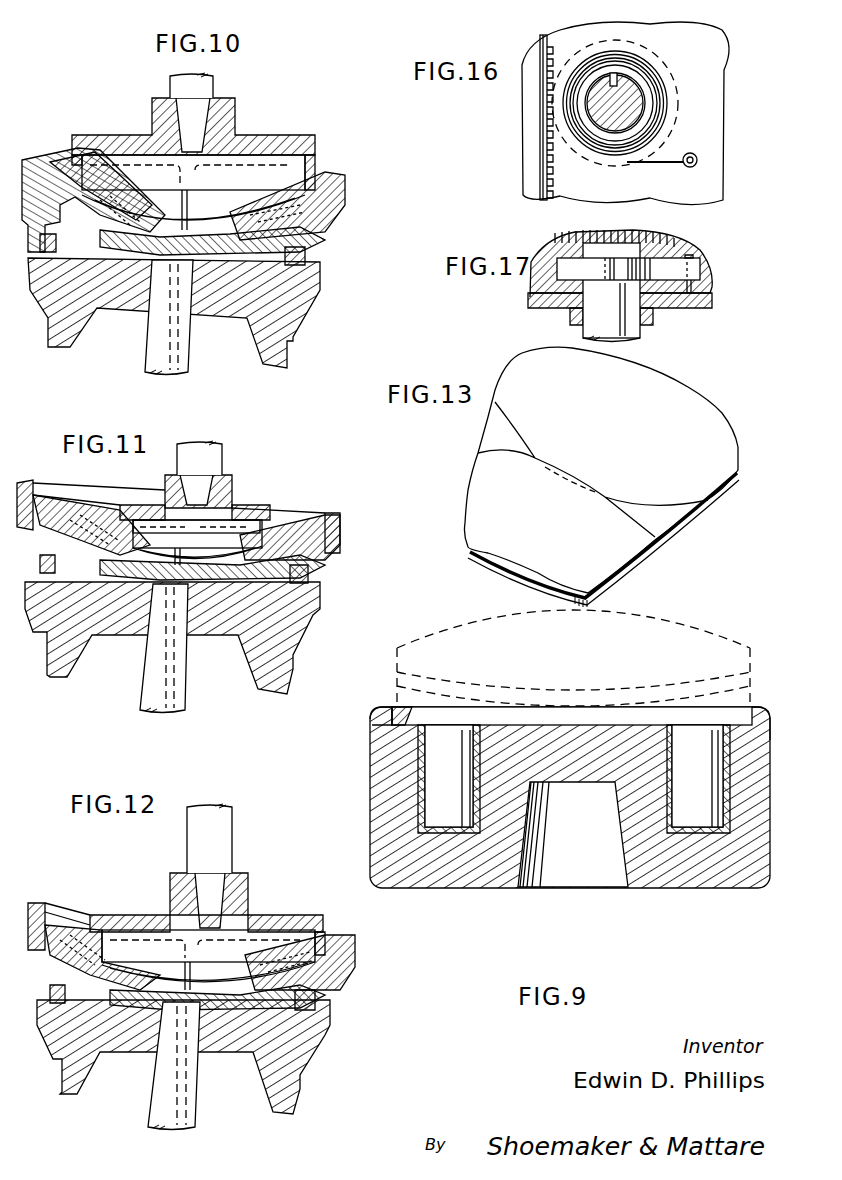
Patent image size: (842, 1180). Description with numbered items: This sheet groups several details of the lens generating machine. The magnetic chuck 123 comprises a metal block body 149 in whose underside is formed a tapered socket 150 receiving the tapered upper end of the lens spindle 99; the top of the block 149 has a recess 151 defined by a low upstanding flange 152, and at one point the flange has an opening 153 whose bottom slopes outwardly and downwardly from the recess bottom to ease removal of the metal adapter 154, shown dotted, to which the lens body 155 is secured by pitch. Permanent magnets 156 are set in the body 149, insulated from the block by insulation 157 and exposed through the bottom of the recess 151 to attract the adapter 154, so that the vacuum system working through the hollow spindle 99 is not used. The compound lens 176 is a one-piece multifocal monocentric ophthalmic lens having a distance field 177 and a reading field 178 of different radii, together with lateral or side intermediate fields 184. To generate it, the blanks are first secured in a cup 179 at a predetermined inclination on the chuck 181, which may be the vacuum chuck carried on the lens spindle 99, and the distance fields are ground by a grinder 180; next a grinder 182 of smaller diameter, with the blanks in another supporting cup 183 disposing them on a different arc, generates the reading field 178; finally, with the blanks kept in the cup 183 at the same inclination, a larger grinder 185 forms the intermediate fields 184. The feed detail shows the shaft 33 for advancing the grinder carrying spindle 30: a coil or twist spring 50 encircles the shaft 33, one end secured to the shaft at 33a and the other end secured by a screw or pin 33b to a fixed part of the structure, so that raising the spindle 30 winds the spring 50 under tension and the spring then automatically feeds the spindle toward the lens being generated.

In FIG. 16, the grinder carrying spindle 30 is at (540, 153).
In FIG. 16, the shaft 33 is at (635, 117).
In FIG. 17, the shaft 33 is at (612, 315).
In FIG. 16, the spring end securement to shaft 33a is at (640, 83).
In FIG. 16, the screw or pin 33b is at (698, 160).
In FIG. 17, the screw or pin 33b is at (690, 255).
In FIG. 16, the coil or twist spring 50 is at (663, 77).
In FIG. 17, the coil or twist spring 50 is at (630, 265).
In FIG. 10, the lens spindle 99 is at (183, 362).
In FIG. 11, the lens spindle 99 is at (185, 700).
In FIG. 12, the lens spindle 99 is at (190, 1113).
In FIG. 9, the magnetic chuck 123 is at (546, 818).
In FIG. 9, the metal block body 149 is at (433, 863).
In FIG. 9, the tapered socket 150 is at (622, 860).
In FIG. 9, the recess 151 is at (415, 725).
In FIG. 9, the upstanding flange 152 is at (383, 718).
In FIG. 9, the opening 153 is at (760, 727).
In FIG. 9, the adapter 154 is at (743, 690).
In FIG. 9, the lens body 155 is at (693, 630).
In FIG. 9, the permanent magnets 156 is at (700, 820).
In FIG. 9, the insulation 157 is at (467, 832).
In FIG. 10, the lens 176 is at (60, 158).
In FIG. 11, the lens 176 is at (68, 520).
In FIG. 12, the lens 176 is at (68, 935).
In FIG. 13, the lens 176 is at (485, 428).
In FIG. 10, the distance field 177 is at (298, 192).
In FIG. 11, the distance field 177 is at (300, 535).
In FIG. 12, the distance field 177 is at (208, 960).
In FIG. 13, the distance field 177 is at (708, 422).
In FIG. 11, the reading field 178 is at (255, 518).
In FIG. 13, the reading field 178 is at (485, 535).
In FIG. 10, the cup 179 is at (328, 222).
In FIG. 10, the grinder 180 is at (290, 138).
In FIG. 10, the chuck 181 is at (300, 293).
In FIG. 11, the chuck 181 is at (295, 645).
In FIG. 12, the chuck 181 is at (308, 1057).
In FIG. 11, the grinder of smaller diameter 182 is at (262, 525).
In FIG. 11, the supporting cup 183 is at (335, 548).
In FIG. 12, the supporting cup 183 is at (350, 977).
In FIG. 13, the lateral or side intermediate fields 184 is at (682, 513).
In FIG. 12, the larger grinder 185 is at (142, 920).